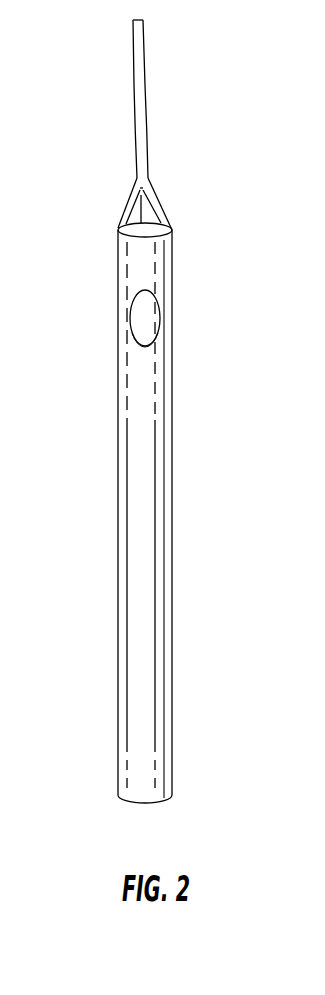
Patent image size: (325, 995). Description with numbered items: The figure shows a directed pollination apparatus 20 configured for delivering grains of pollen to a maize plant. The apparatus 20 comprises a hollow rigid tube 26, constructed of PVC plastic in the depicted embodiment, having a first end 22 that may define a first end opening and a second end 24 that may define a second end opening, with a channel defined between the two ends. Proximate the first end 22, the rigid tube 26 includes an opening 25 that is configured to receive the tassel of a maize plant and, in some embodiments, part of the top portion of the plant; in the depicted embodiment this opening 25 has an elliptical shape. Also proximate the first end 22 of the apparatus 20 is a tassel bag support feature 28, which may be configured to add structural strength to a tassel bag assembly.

The directed pollination apparatus 20 is at (200, 466).
The first end 22 is at (113, 222).
The second end 24 is at (101, 812).
The opening 25 is at (140, 340).
The hollow rigid tube 26 is at (160, 546).
The tassel bag support feature 28 is at (154, 74).